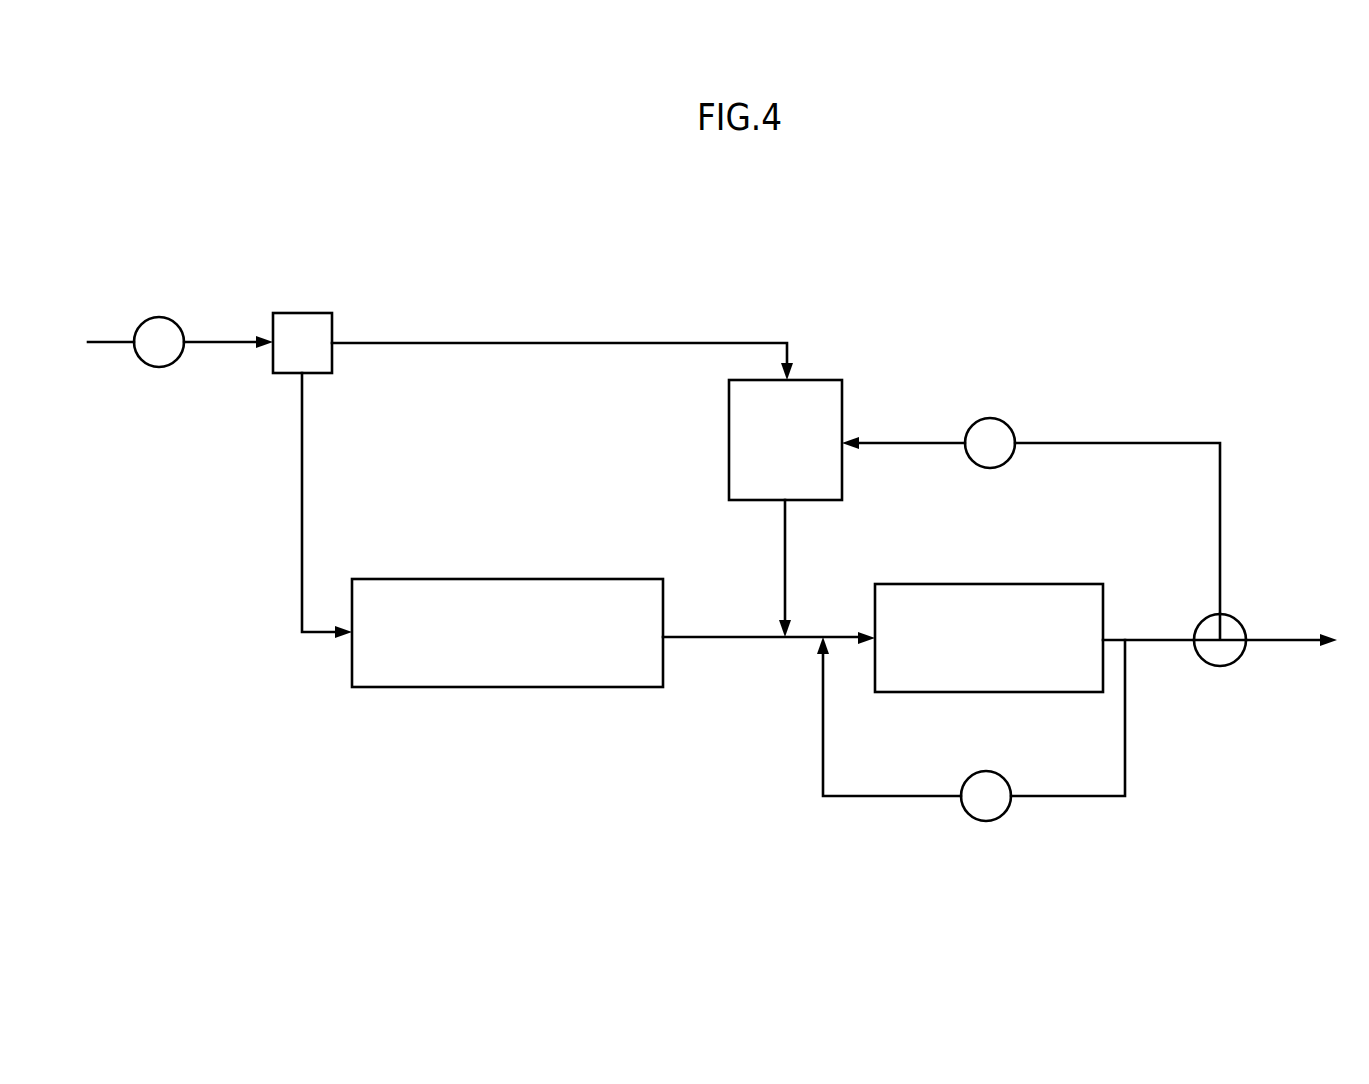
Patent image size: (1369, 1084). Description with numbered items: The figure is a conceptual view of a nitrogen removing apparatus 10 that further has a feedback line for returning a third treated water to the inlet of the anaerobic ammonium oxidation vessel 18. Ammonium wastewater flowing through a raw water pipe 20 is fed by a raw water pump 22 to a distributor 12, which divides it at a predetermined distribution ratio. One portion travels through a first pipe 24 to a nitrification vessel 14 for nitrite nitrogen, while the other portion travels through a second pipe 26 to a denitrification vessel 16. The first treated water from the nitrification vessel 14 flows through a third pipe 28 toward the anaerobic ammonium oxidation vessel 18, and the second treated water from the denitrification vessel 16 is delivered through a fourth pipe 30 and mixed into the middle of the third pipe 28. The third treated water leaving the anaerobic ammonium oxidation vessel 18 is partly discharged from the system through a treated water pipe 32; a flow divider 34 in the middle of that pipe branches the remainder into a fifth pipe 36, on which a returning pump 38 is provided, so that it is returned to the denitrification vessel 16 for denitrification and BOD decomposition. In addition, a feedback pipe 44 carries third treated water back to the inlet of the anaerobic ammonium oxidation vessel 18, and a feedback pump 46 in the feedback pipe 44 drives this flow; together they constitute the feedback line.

The nitrogen removing apparatus 10 is at (1208, 328).
The distributor 12 is at (301, 313).
The nitrification vessel 14 is at (505, 689).
The denitrification vessel 16 is at (832, 379).
The anaerobic ammonium oxidation vessel 18 is at (935, 694).
The raw water pipe 20 is at (96, 345).
The raw water pump 22 is at (159, 368).
The first pipe 24 is at (300, 532).
The second pipe 26 is at (505, 347).
The third pipe 28 is at (710, 640).
The fourth pipe 30 is at (786, 540).
The treated water pipe 32 is at (1159, 643).
The flow divider 34 is at (1220, 667).
The fifth pipe 36 is at (1130, 443).
The returning pump 38 is at (990, 418).
The feedback pipe 44 is at (1060, 799).
The feedback pump 46 is at (986, 822).